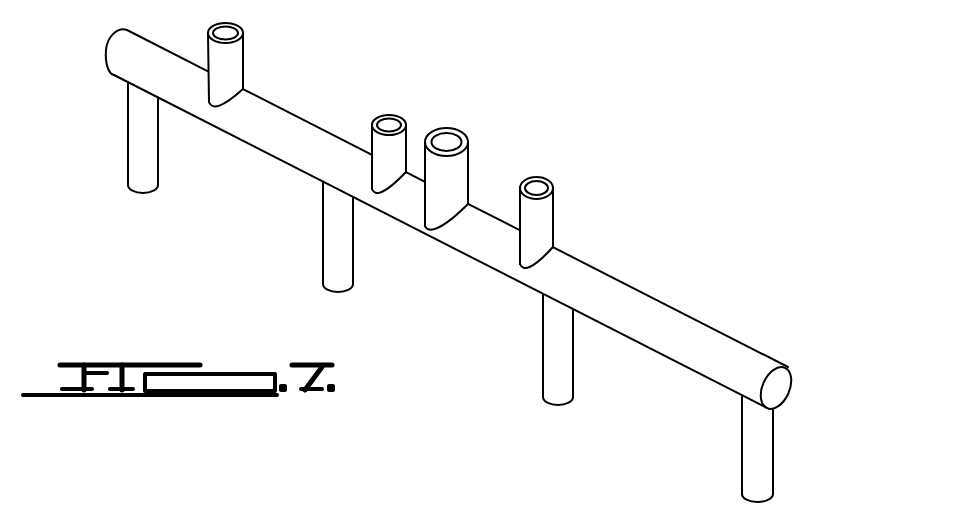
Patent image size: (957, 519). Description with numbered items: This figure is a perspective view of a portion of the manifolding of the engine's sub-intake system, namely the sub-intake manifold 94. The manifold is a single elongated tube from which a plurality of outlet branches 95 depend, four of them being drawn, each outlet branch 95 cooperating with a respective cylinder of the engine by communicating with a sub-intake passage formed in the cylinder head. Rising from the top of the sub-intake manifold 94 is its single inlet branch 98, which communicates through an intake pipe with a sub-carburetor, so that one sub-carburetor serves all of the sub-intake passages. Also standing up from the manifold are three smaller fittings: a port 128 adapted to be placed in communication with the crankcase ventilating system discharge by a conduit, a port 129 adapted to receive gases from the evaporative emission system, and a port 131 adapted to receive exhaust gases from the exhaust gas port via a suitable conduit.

The sub-intake manifold 94 is at (683, 320).
The outlet branches 95 is at (168, 172).
The inlet branch 98 is at (460, 162).
The port 128 is at (239, 26).
The port 129 is at (398, 116).
The port 131 is at (543, 176).